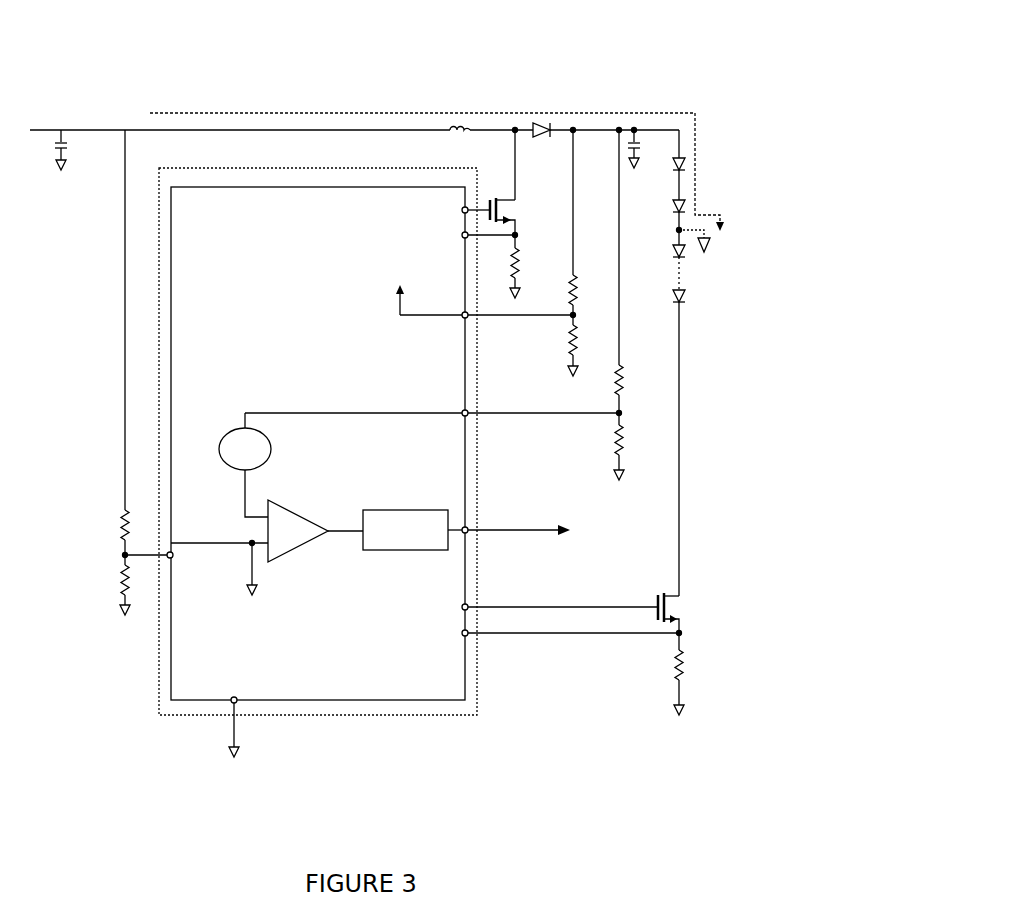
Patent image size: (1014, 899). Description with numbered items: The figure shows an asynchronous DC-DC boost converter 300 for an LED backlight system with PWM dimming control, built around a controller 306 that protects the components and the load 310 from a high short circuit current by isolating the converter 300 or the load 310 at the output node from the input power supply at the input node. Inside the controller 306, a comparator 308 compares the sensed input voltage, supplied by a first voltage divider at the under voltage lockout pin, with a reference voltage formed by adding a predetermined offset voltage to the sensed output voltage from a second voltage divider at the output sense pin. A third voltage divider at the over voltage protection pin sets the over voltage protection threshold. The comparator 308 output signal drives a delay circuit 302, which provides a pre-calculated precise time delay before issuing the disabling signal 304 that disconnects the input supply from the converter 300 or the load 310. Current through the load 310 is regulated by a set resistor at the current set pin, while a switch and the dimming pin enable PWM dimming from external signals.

The asynchronous DC-DC boost converter 300 is at (355, 49).
The delay circuit 302 is at (405, 530).
The disabling signal 304 is at (538, 531).
The controller 306 is at (487, 374).
The comparator 308 is at (305, 495).
The load 310 is at (742, 152).